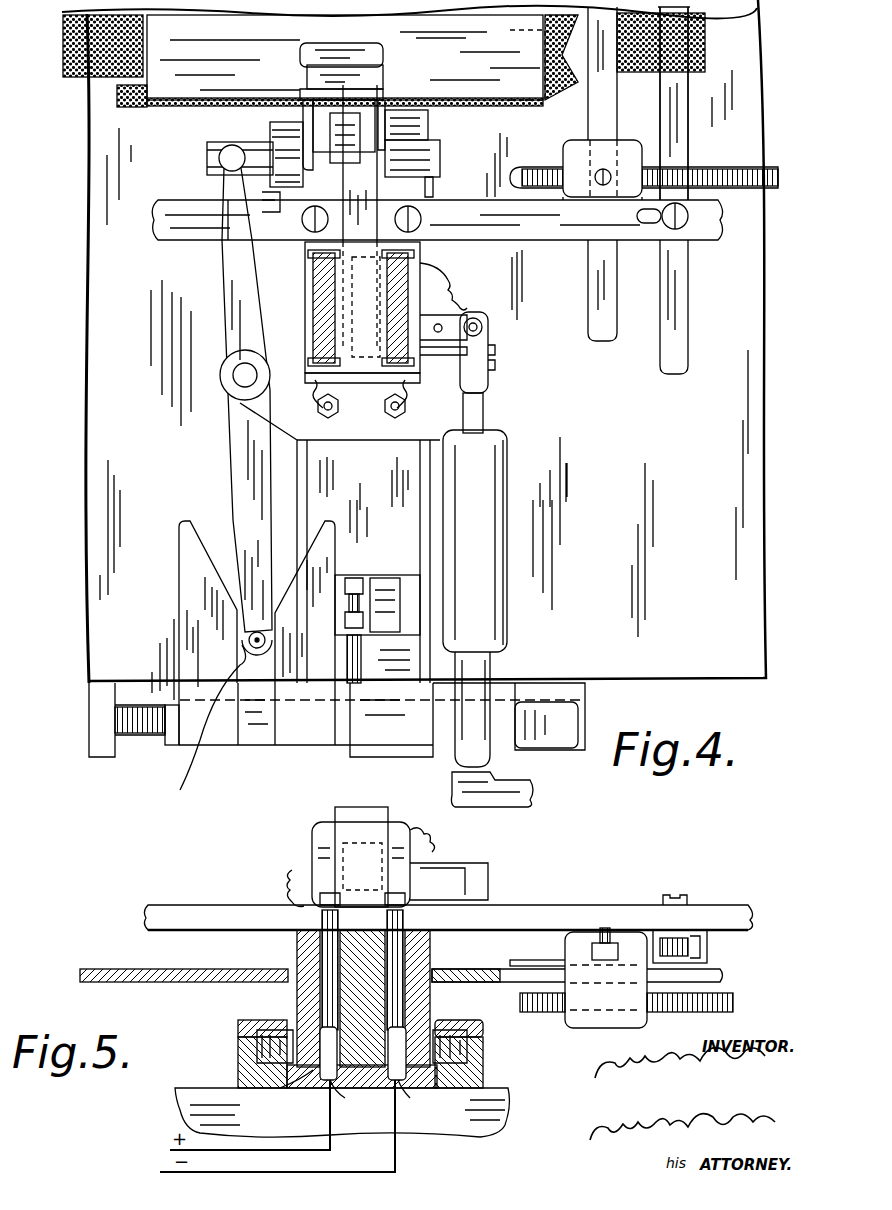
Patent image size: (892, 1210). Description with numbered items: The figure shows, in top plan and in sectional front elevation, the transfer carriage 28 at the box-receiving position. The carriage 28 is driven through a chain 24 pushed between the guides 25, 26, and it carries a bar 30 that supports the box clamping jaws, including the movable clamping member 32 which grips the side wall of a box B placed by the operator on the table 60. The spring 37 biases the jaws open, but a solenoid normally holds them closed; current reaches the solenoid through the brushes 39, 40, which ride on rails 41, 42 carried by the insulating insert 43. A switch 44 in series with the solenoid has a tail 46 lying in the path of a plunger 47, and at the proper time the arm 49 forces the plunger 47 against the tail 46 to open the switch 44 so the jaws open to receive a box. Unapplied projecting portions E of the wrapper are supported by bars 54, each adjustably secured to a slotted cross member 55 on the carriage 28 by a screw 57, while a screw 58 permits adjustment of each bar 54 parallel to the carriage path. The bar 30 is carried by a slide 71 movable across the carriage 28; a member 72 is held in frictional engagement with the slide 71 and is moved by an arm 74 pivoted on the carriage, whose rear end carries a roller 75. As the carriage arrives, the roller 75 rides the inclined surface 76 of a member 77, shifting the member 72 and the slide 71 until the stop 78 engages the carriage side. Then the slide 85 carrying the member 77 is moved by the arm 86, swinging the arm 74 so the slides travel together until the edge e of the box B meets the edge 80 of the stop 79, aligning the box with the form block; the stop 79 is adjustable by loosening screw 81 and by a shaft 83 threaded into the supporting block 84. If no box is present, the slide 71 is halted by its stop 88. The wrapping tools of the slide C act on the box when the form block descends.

In FIG. 5, the chain 24 is at (262, 1025).
In FIG. 5, the guide 25 is at (238, 1075).
In FIG. 5, the guide 26 is at (238, 1022).
In FIG. 4, the carriage 28 is at (420, 497).
In FIG. 5, the carriage 28 is at (426, 944).
In FIG. 4, the bar 30 is at (345, 160).
In FIG. 4, the movable clamping member 32 is at (345, 45).
In FIG. 4, the spring 37 is at (352, 355).
In FIG. 5, the brush 39 is at (406, 1082).
In FIG. 5, the brush 40 is at (330, 1082).
In FIG. 4, the rail 41 is at (345, 578).
In FIG. 5, the rail 41 is at (348, 1102).
In FIG. 4, the rail 42 is at (390, 578).
In FIG. 5, the rail 42 is at (389, 1102).
In FIG. 5, the insert 43 is at (280, 1090).
In FIG. 4, the switch 44 is at (490, 380).
In FIG. 5, the tail 46 is at (480, 875).
In FIG. 4, the plunger 47 is at (483, 415).
In FIG. 4, the arm 49 is at (518, 797).
In FIG. 4, the bar 54 is at (692, 322).
In FIG. 4, the slotted cross member 55 is at (165, 210).
In FIG. 5, the slotted cross member 55 is at (202, 912).
In FIG. 5, the screw 57 is at (690, 900).
In FIG. 5, the screw 58 is at (708, 948).
In FIG. 4, the table 60 is at (88, 425).
In FIG. 5, the table 60 is at (185, 971).
In FIG. 4, the slide 71 is at (272, 125).
In FIG. 4, the slide member 72 is at (226, 148).
In FIG. 4, the arm 74 is at (238, 450).
In FIG. 4, the roller 75 is at (197, 726).
In FIG. 4, the inclined surface 76 is at (198, 528).
In FIG. 4, the member 77 is at (185, 648).
In FIG. 4, the stop 78 is at (434, 188).
In FIG. 4, the stop 79 is at (585, 95).
In FIG. 5, the stop 79 is at (518, 960).
In FIG. 4, the edge 80 is at (560, 62).
In FIG. 4, the screw 81 is at (597, 178).
In FIG. 4, the shaft 83 is at (770, 190).
In FIG. 5, the shaft 83 is at (655, 1015).
In FIG. 4, the supporting block 84 is at (610, 162).
In FIG. 5, the supporting block 84 is at (608, 1030).
In FIG. 4, the slide 85 is at (258, 740).
In FIG. 4, the arm 86 is at (540, 728).
In FIG. 4, the stop 88 is at (264, 209).
In FIG. 4, the box B is at (470, 85).
In FIG. 4, the projecting portions of the wrapper E is at (112, 90).
In FIG. 4, the edge of the box e is at (545, 42).
In FIG. 5, the slide C is at (445, 1128).